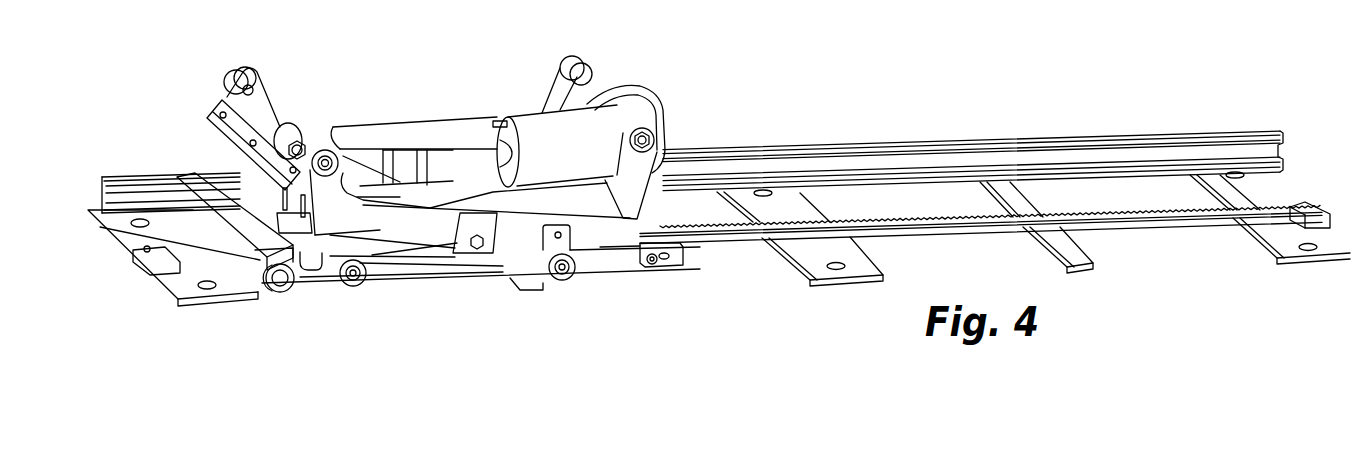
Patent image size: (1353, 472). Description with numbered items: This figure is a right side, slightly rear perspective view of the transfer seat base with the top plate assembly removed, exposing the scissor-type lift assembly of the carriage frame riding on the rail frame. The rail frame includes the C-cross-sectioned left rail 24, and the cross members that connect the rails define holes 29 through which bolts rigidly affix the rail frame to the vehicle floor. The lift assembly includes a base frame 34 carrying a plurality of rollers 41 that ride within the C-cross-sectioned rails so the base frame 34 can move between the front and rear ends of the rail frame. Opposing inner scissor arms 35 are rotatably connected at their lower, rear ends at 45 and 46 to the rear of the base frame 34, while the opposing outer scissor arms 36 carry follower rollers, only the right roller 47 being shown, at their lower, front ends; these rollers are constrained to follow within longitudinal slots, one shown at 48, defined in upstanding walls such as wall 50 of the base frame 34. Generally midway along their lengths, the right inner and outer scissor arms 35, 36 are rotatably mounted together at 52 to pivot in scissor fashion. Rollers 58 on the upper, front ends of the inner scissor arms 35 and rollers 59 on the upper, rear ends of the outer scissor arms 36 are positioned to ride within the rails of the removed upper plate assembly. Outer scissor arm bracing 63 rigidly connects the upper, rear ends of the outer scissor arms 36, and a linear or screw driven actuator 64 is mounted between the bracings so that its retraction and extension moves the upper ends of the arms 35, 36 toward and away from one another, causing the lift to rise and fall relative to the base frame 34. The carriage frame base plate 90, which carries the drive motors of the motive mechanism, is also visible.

The left rail 24 is at (836, 150).
The holes 29 is at (836, 270).
The base frame 34 is at (250, 273).
The inner scissor arms 35 is at (543, 103).
The outer scissor arms 36 is at (265, 105).
The rollers 41 is at (272, 292).
The rotatable connection 45 is at (233, 172).
The rotatable connection 46 is at (306, 272).
The right follower roller 47 is at (656, 264).
The longitudinal slot 48 is at (620, 275).
The upstanding wall 50 is at (683, 256).
The pivot mount 52 is at (472, 251).
The rollers 58 is at (562, 62).
The rollers 59 is at (232, 75).
The outer scissor arm bracing 63 is at (208, 120).
The actuator 64 is at (434, 135).
The base plate 90 is at (388, 270).